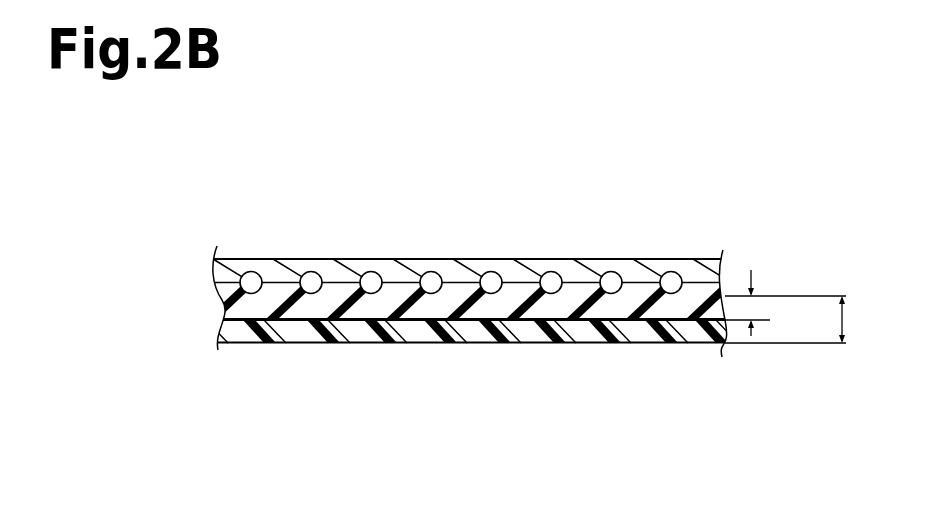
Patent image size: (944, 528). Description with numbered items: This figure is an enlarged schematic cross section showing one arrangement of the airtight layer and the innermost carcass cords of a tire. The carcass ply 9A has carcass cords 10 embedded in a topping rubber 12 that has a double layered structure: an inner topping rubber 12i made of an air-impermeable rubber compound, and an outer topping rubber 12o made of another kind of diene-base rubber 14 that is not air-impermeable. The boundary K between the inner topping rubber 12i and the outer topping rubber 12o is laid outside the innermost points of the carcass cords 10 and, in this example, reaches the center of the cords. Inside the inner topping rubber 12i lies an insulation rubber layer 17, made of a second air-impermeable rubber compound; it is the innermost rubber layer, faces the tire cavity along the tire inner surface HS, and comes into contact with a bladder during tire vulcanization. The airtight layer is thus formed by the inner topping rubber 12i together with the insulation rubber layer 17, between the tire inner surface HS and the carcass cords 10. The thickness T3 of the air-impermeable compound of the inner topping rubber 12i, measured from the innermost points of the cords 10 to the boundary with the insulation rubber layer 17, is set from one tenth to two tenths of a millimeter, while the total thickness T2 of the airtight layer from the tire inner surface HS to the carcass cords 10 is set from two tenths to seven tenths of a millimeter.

The carcass ply 9A is at (570, 222).
The carcass cords 10 is at (437, 280).
The boundary K is at (330, 283).
The topping rubber 12 is at (53, 227).
The outer topping rubber 12o is at (222, 276).
The diene-base rubber 14 is at (469, 231).
The inner topping rubber 12i is at (222, 306).
The insulation rubber layer 17 is at (223, 332).
The tire inner surface HS is at (632, 343).
The thickness of the air-impermeable rubber compound T3 is at (785, 286).
The thickness of the airtight layer T2 is at (804, 319).